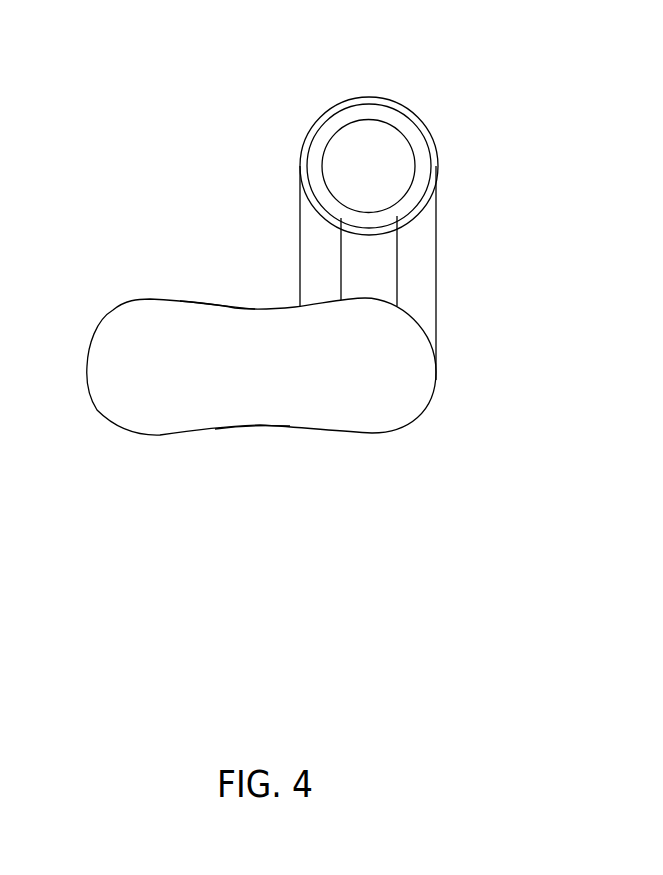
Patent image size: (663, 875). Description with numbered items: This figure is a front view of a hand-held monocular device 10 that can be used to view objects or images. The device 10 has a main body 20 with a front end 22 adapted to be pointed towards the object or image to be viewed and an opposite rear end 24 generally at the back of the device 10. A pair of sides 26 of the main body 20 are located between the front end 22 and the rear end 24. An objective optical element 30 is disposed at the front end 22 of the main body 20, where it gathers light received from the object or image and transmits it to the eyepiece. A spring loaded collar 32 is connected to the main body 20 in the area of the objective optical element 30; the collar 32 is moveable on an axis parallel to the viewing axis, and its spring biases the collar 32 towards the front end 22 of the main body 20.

The hand-held monocular device 10 is at (107, 244).
The main body 20 is at (263, 370).
The front end 22 is at (148, 412).
The rear end 24 is at (358, 403).
The sides 26 is at (231, 306).
The objective optical element 30 is at (400, 162).
The spring loaded collar 32 is at (387, 98).